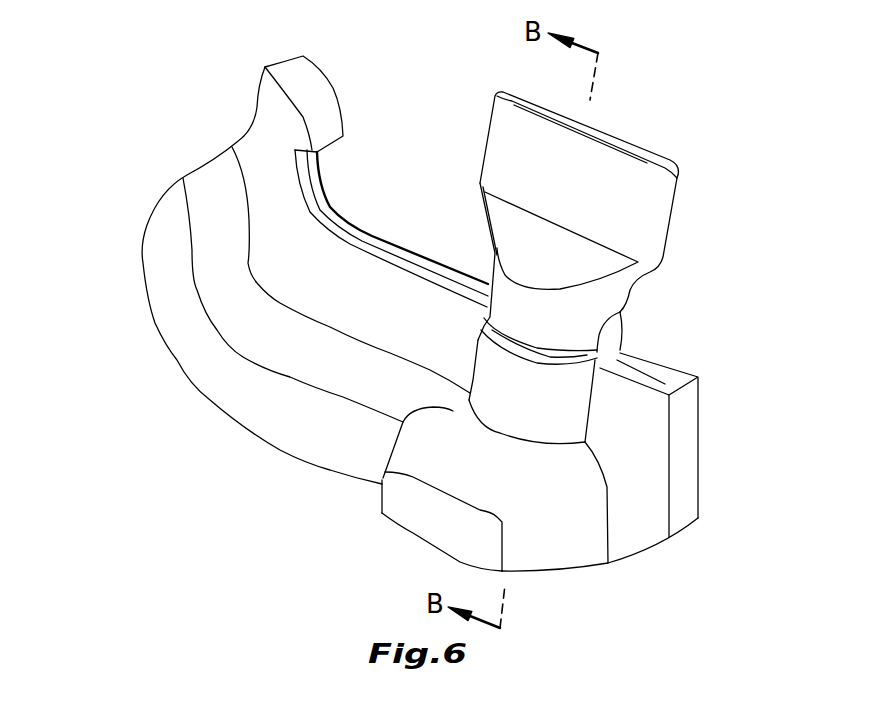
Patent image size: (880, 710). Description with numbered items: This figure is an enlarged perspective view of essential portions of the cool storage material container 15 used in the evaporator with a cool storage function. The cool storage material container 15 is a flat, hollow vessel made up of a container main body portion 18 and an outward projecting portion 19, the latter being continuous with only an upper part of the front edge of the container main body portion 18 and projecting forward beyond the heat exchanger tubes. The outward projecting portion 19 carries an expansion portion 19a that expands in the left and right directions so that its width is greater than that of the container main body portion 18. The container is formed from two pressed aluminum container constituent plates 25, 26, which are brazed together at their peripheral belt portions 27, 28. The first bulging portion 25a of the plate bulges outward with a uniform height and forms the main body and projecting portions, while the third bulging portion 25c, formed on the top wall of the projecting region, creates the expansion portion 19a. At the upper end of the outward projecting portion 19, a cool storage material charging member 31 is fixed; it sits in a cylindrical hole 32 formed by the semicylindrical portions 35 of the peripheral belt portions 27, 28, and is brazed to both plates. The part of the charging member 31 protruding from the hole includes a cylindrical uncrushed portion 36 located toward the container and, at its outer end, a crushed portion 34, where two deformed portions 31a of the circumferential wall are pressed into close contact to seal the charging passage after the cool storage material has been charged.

The cool storage material container 15 is at (234, 462).
The container main body portion 18 is at (190, 357).
The outward projecting portion 19 is at (623, 543).
The expansion portion 19a is at (393, 508).
The container constituent plate 25 is at (312, 204).
The first bulging portion 25a is at (232, 390).
The third bulging portion 25c is at (413, 540).
The container constituent plate 26 is at (362, 230).
The peripheral belt portion 27 is at (645, 537).
The peripheral belt portion 28 is at (663, 368).
The cool storage material charging member 31 is at (688, 220).
The deformed portion 31a is at (652, 155).
The cylindrical hole 32 is at (623, 312).
The crushed portion 34 is at (505, 138).
The semicylindrical portion 35 is at (493, 368).
The cylindrical uncrushed portion 36 is at (503, 293).